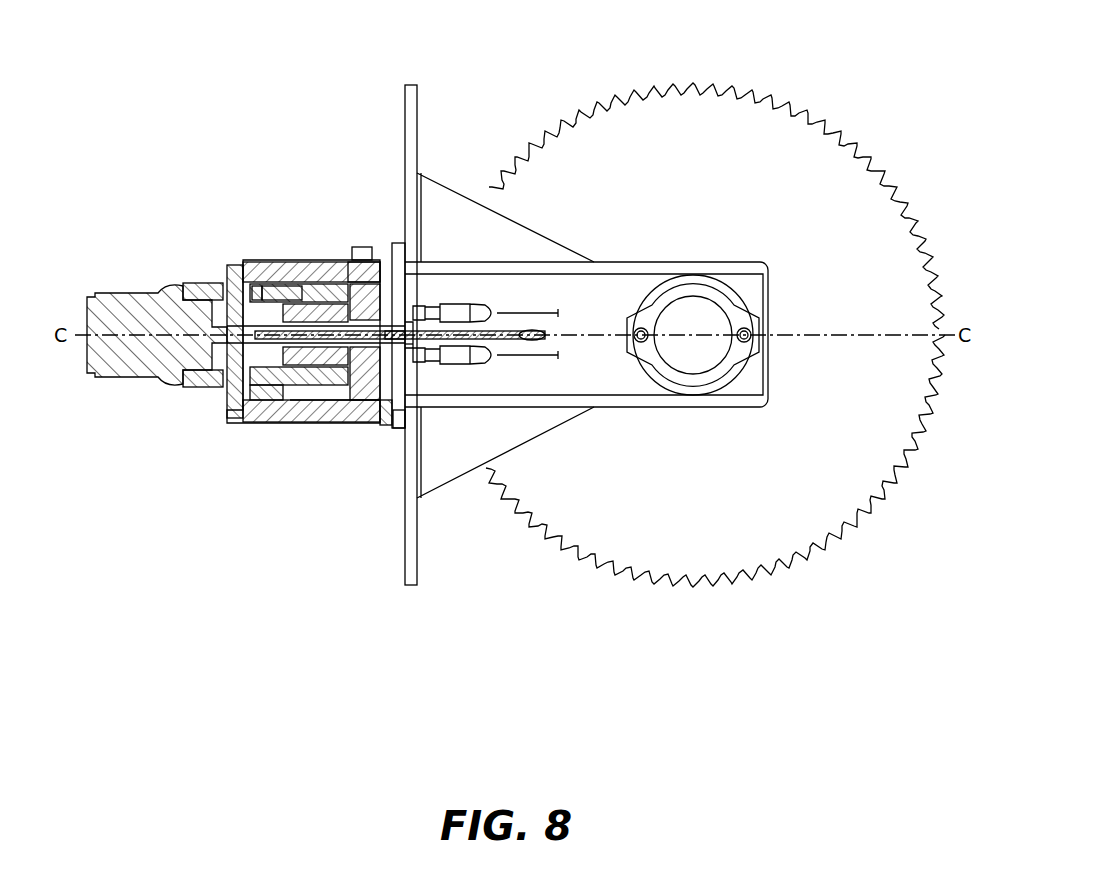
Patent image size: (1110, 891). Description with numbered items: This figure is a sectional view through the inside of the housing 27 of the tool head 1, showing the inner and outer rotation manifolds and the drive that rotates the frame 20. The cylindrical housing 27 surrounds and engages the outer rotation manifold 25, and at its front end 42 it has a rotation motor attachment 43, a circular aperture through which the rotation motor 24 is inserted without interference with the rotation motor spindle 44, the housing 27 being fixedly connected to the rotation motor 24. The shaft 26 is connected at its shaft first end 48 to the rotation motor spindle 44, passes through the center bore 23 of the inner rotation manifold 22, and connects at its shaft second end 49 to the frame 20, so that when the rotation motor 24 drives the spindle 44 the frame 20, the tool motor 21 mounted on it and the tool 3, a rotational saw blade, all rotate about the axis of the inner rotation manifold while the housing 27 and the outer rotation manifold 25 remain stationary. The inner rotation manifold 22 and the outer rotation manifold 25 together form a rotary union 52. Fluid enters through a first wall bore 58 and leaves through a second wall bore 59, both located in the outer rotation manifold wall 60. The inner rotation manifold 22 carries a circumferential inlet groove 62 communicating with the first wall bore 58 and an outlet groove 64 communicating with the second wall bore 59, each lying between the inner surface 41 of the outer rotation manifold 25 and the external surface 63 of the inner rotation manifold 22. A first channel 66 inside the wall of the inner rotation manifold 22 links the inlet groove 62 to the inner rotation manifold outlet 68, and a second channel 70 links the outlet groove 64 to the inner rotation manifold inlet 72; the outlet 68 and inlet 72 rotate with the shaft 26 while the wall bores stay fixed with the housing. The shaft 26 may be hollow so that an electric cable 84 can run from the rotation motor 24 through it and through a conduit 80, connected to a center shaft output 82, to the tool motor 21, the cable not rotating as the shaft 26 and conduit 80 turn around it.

The tool head 1 is at (249, 112).
The tool 3 is at (850, 185).
The frame 20 is at (478, 232).
The tool motor 21 is at (708, 352).
The inner rotation manifold 22 is at (258, 262).
The center bore 23 is at (250, 268).
The rotation motor 24 is at (103, 295).
The outer rotation manifold 25 is at (240, 285).
The shaft 26 is at (348, 262).
The housing 27 is at (314, 258).
The inner surface 41 is at (365, 262).
The front end 42 is at (188, 192).
The rotation motor attachment 43 is at (200, 283).
The rotation motor spindle 44 is at (207, 352).
The shaft first end 48 is at (232, 380).
The shaft second end 49 is at (416, 350).
The rotary union 52 is at (295, 476).
The first wall bore 58 is at (340, 415).
The second wall bore 59 is at (266, 385).
The outer rotation manifold wall 60 is at (357, 425).
The inlet groove 62 is at (323, 262).
The external surface 63 is at (292, 262).
The outlet groove 64 is at (272, 262).
The first channel 66 is at (378, 418).
The inner rotation manifold outlet 68 is at (420, 362).
The second channel 70 is at (395, 300).
The inner rotation manifold inlet 72 is at (404, 322).
The conduit 80 is at (527, 342).
The center shaft output 82 is at (432, 305).
The electric cable 84 is at (432, 360).